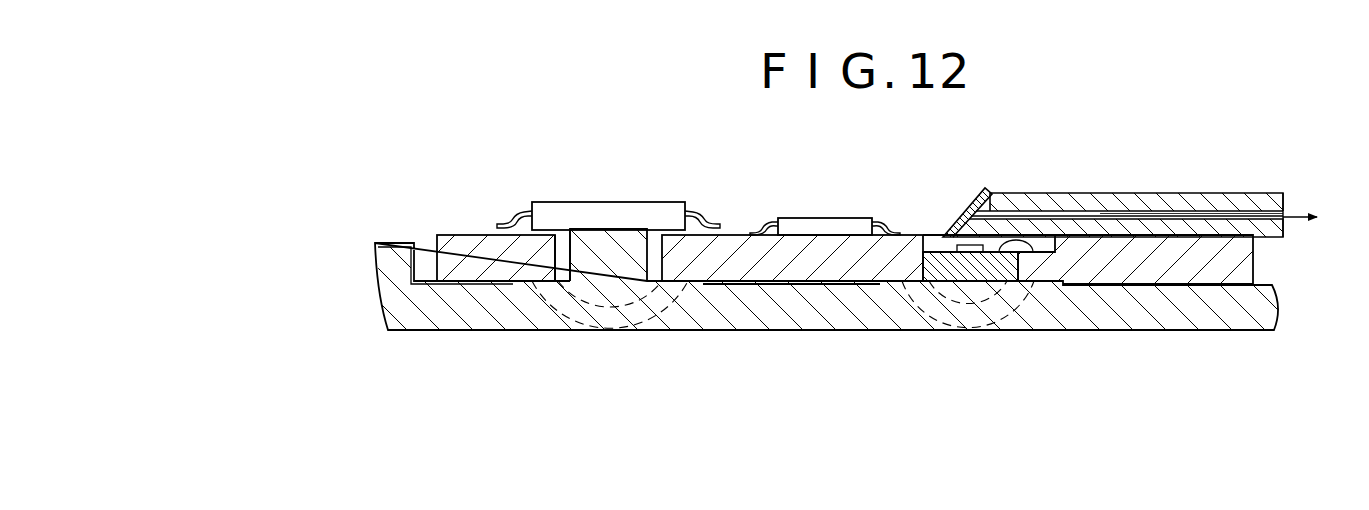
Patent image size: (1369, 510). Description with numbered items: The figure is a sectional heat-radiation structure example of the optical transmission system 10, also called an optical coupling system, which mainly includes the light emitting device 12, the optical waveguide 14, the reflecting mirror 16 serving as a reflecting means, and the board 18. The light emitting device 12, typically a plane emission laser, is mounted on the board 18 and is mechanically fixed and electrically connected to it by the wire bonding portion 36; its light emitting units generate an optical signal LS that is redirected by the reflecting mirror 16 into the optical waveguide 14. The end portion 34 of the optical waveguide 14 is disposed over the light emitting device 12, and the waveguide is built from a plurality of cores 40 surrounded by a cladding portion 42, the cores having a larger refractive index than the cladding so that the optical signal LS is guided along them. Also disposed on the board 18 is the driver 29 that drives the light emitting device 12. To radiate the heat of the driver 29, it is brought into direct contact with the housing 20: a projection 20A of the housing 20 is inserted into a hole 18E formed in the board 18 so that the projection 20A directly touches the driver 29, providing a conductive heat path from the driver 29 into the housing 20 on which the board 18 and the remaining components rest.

The optical transmission system 10 is at (983, 178).
The light emitting device 12 is at (962, 265).
The optical waveguide 14 is at (1140, 193).
The reflecting mirror 16 is at (945, 203).
The board 18 is at (764, 270).
The hole 18E is at (566, 268).
The housing 20 is at (835, 315).
The projection 20A is at (608, 255).
The driver 29 is at (604, 218).
The end portion 34 is at (1055, 165).
The wire bonding portion 36 is at (1018, 240).
The core 40 is at (1288, 213).
The cladding portion 42 is at (1218, 203).
The optical signal LS is at (1292, 222).